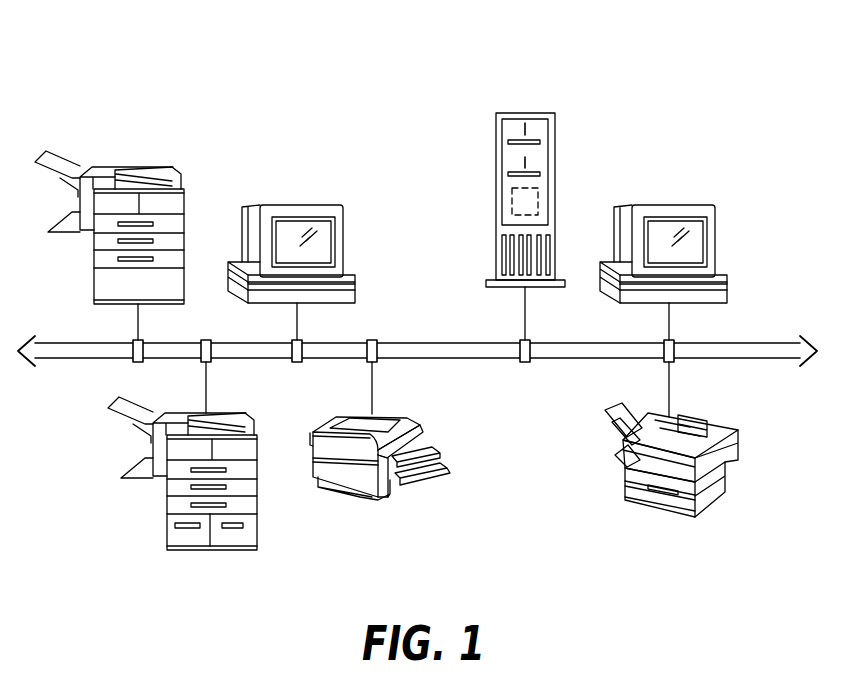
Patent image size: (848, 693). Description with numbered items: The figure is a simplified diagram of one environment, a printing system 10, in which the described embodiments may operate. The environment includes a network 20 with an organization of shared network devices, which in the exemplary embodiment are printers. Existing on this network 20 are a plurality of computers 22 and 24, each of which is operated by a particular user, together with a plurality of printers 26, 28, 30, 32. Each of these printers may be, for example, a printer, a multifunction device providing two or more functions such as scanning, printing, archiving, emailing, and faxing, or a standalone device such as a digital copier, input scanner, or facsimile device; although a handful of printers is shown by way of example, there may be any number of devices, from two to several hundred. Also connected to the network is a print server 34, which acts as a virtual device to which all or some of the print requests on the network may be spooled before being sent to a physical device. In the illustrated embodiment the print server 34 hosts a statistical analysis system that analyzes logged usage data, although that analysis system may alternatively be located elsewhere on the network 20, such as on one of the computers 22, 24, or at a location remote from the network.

The printing system 10 is at (430, 50).
The network 20 is at (740, 343).
The computer 22 is at (345, 215).
The computer 24 is at (718, 215).
The printer 26 is at (185, 202).
The printer 28 is at (197, 552).
The printer 30 is at (370, 502).
The printer 32 is at (632, 502).
The print server 34 is at (496, 145).